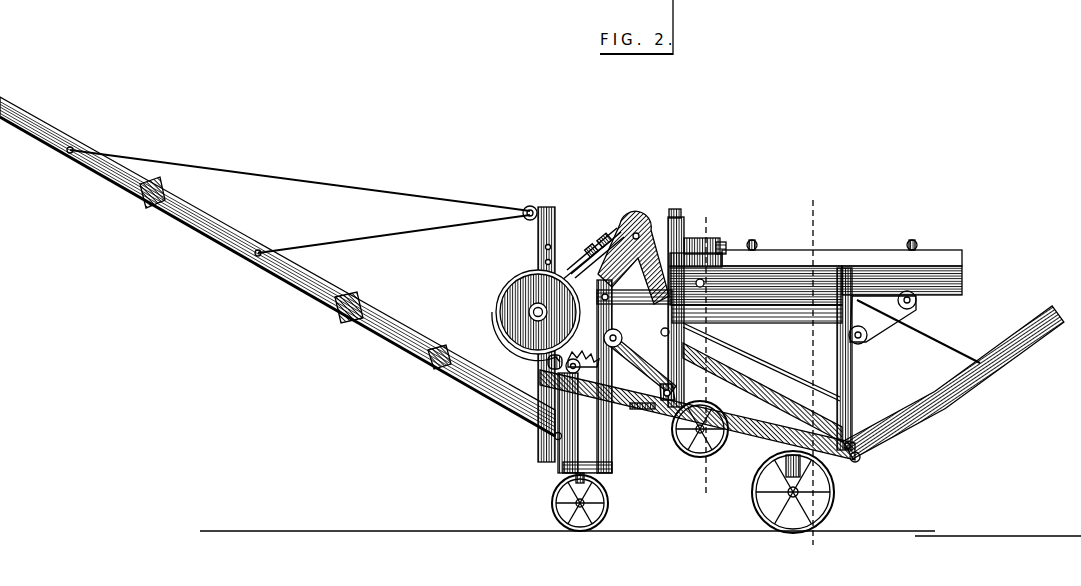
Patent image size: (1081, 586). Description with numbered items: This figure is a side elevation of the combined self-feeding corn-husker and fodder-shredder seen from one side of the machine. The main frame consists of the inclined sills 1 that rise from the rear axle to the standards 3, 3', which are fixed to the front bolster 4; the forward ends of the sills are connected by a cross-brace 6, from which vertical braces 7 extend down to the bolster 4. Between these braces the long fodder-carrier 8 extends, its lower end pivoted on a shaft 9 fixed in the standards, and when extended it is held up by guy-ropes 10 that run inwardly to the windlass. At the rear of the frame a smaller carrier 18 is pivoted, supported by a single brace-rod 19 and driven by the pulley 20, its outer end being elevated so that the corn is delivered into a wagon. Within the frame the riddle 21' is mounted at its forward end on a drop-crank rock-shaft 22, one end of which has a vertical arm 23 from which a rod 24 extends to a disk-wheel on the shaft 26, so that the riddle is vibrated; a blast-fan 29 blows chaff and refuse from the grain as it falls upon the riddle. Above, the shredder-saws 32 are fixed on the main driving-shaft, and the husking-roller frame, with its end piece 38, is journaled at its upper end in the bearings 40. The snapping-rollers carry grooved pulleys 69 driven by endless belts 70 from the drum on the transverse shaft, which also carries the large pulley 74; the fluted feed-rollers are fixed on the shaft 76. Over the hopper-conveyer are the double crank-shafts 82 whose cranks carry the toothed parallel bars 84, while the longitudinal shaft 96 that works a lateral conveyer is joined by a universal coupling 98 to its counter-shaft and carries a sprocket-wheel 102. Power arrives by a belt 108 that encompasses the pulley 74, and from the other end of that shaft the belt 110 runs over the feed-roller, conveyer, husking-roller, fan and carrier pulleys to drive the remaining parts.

The inclined sill 1 is at (695, 340).
The standard 3 is at (616, 376).
The standard 3' is at (578, 423).
The front bolster 4 is at (606, 483).
The cross-brace 6 is at (719, 212).
The vertical brace 7 is at (826, 212).
The fodder-carrier 8 is at (213, 228).
The shaft 9 is at (556, 440).
The guy-rope 10 is at (447, 181).
The carrier 18 is at (974, 385).
The brace-rod 19 is at (936, 340).
The pulley 20 is at (862, 459).
The riddle 21' is at (639, 426).
The drop-crank rock-shaft 22 is at (662, 417).
The vertical arm 23 is at (660, 389).
The rod 24 is at (654, 331).
The shaft 26 is at (617, 349).
The blast-fan 29 is at (684, 452).
The shredder-saw 32 is at (585, 349).
The end piece 38 is at (788, 385).
The bearing 40 is at (643, 355).
The grooved pulley 69 is at (608, 228).
The endless belt 70 is at (582, 264).
The large pulley 74 is at (510, 298).
The shaft 76 is at (636, 222).
The double crank-shaft 82 is at (925, 250).
The parallel bar 84 is at (837, 233).
The longitudinal shaft 96 is at (705, 252).
The universal coupling 98 is at (679, 217).
The sprocket-wheel 102 is at (724, 244).
The belt 108 is at (537, 355).
The belt 110 is at (765, 352).